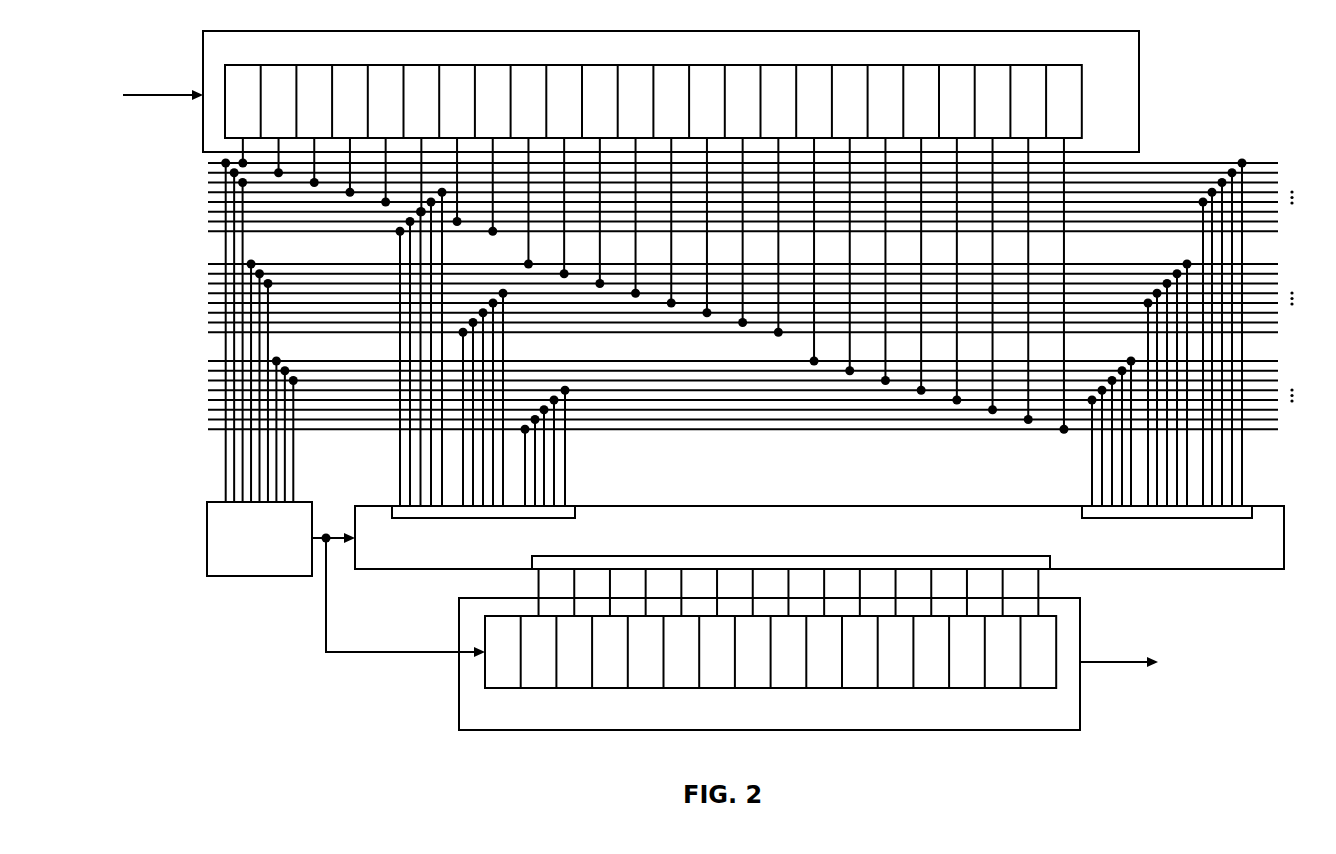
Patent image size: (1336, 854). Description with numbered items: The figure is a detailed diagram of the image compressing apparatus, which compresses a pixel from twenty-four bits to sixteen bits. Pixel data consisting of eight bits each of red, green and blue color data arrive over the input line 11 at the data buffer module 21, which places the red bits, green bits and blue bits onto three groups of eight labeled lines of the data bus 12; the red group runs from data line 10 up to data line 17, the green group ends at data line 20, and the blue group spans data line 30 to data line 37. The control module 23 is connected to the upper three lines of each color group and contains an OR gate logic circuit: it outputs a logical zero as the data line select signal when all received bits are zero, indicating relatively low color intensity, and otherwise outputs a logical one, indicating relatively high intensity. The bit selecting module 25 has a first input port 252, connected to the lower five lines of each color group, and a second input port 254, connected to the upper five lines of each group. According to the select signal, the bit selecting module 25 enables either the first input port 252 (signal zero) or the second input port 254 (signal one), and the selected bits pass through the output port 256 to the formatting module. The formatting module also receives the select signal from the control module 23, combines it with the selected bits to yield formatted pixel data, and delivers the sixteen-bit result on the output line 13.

The data buffer module 21 is at (671, 232).
The input line 11 is at (173, 95).
The data bus 12 is at (200, 310).
The data line 17 is at (758, 163).
The data line 10 is at (758, 231).
The data line 20 is at (758, 332).
The data line 37 is at (758, 361).
The data line 30 is at (758, 429).
The control module 23 is at (346, 408).
The bit selecting module 25 is at (819, 537).
The first input port 252 is at (552, 513).
The second input port 254 is at (1106, 512).
The output port 256 is at (1030, 560).
The output line 13 is at (1115, 664).